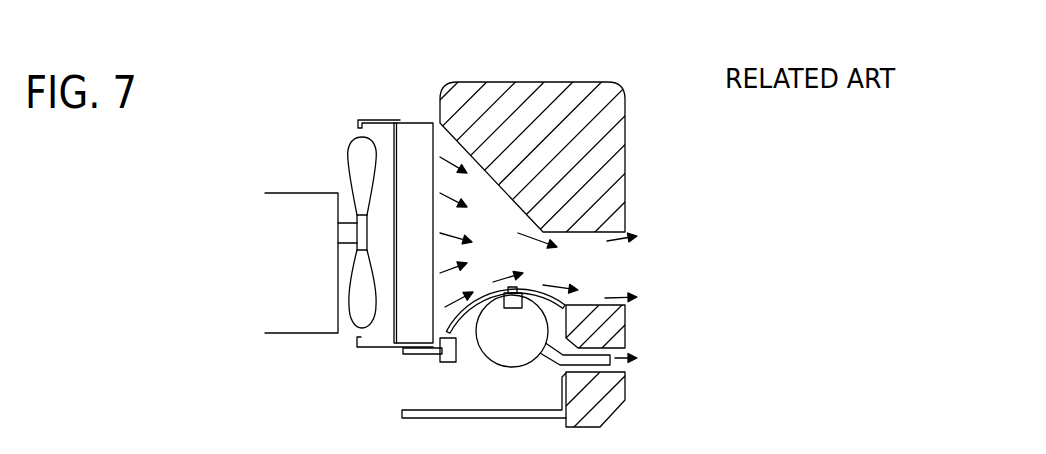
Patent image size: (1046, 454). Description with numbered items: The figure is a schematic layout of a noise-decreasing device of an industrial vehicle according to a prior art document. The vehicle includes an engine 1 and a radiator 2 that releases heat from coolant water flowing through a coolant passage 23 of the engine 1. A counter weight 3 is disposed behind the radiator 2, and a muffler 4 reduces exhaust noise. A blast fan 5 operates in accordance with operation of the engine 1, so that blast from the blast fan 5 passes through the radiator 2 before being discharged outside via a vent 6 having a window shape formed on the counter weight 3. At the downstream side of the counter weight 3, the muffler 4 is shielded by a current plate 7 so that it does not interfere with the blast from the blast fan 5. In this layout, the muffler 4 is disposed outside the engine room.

The engine 1 is at (290, 192).
The radiator 2 is at (413, 122).
The coolant passage 23 is at (368, 118).
The counter weight 3 is at (548, 82).
The muffler 4 is at (488, 361).
The blast fan 5 is at (352, 329).
The vent 6 is at (650, 295).
The current plate 7 is at (533, 294).